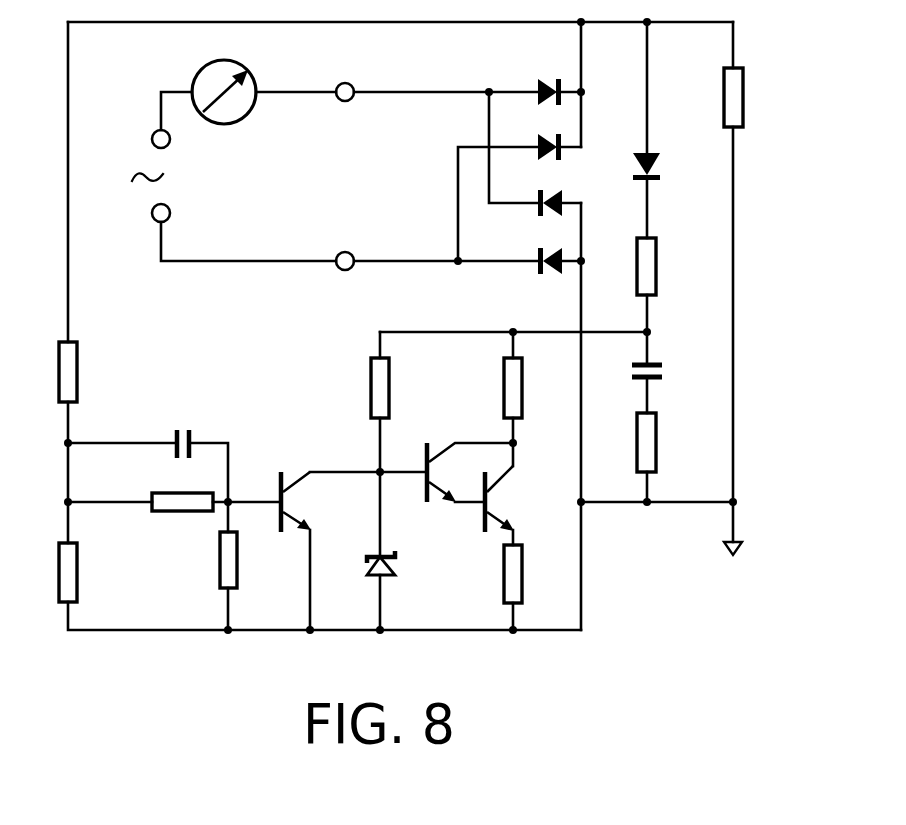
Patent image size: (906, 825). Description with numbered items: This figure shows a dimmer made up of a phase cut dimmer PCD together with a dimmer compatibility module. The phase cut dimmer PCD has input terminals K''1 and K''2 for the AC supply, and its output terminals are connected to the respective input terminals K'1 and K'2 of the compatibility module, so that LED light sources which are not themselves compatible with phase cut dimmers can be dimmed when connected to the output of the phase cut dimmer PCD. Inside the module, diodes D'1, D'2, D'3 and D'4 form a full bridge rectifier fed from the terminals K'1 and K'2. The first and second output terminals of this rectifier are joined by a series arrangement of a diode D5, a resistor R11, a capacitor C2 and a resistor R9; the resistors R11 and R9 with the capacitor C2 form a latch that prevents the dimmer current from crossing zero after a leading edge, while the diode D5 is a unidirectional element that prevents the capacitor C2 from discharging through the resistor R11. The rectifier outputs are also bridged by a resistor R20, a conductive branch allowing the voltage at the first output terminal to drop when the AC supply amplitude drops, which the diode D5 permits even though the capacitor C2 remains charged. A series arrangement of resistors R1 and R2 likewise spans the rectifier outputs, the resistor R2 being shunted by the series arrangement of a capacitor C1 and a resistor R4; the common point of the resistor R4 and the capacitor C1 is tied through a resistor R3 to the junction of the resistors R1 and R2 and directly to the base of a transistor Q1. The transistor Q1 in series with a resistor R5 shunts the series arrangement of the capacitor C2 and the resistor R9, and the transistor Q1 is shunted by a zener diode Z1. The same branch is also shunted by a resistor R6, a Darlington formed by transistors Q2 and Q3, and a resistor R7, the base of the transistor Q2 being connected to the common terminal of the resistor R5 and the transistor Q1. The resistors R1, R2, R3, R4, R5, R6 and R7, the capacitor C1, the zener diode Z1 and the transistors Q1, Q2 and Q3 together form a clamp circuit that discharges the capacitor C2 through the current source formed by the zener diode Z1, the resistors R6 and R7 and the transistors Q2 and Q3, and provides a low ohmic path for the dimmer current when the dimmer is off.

The phase cut dimmer PCD is at (224, 78).
The input terminal of the phase cut dimmer K''1 is at (137, 138).
The input terminal of the phase cut dimmer K''2 is at (137, 215).
The input terminal of the full bridge rectifier K'1 is at (327, 77).
The input terminal of the full bridge rectifier K'2 is at (327, 274).
The diode D'1 is at (529, 80).
The diode D'2 is at (529, 135).
The diode D'3 is at (529, 191).
The diode D'4 is at (529, 249).
The diode D5 is at (663, 164).
The resistor R20 is at (756, 97).
The resistor R11 is at (669, 266).
The capacitor C2 is at (663, 375).
The resistor R9 is at (663, 442).
The resistor R1 is at (86, 372).
The resistor R2 is at (86, 572).
The capacitor C1 is at (193, 431).
The resistor R3 is at (182, 520).
The resistor R4 is at (247, 560).
The transistor Q1 is at (307, 502).
The resistor R5 is at (396, 388).
The resistor R6 is at (529, 388).
The resistor R7 is at (529, 574).
The transistor Q2 is at (470, 472).
The transistor Q3 is at (509, 499).
The zener diode Z1 is at (390, 582).